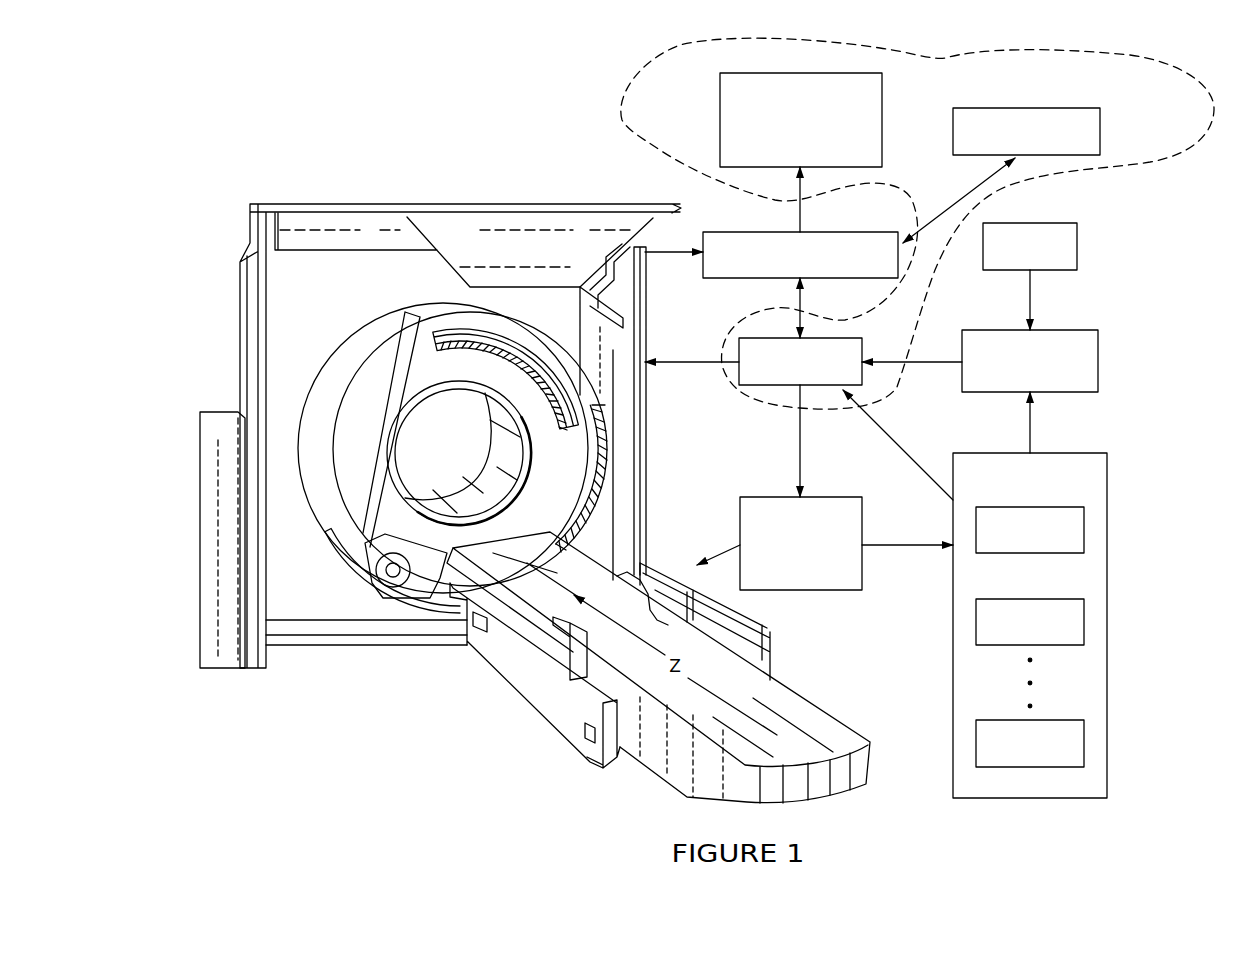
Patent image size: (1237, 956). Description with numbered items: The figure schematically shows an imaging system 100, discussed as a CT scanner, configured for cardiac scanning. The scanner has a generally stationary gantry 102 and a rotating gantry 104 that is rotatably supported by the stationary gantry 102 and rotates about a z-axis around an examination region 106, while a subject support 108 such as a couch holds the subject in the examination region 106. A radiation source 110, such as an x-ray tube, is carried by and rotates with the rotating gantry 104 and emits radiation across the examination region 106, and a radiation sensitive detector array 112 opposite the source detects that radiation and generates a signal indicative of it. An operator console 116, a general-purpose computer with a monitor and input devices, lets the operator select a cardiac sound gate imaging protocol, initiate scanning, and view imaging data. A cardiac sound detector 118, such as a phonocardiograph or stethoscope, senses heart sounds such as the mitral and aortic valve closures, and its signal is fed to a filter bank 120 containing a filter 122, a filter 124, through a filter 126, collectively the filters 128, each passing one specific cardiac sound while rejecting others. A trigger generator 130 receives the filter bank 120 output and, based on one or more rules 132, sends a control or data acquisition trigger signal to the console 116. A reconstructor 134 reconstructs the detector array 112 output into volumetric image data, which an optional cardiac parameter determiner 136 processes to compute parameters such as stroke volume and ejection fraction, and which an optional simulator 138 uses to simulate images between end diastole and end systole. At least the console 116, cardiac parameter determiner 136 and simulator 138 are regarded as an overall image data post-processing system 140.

The imaging system 100 is at (278, 98).
The stationary gantry 102 is at (252, 332).
The rotating gantry 104 is at (413, 367).
The examination region 106 is at (412, 466).
The subject support 108 is at (806, 722).
The radiation source 110 is at (393, 573).
The radiation sensitive detector array 112 is at (558, 388).
The operator console 116 is at (830, 338).
The cardiac sound detector 118 is at (864, 522).
The filter bank 120 is at (1077, 453).
The filter 122 is at (1032, 553).
The filter 124 is at (1030, 598).
The filter 126 is at (1032, 768).
The filters 128 is at (1101, 497).
The trigger generator 130 is at (1077, 330).
The rules 132 is at (1030, 223).
The reconstructor 134 is at (838, 232).
The cardiac parameter determiner 136 is at (720, 122).
The simulator 138 is at (1102, 120).
The image data post-processing system 140 is at (622, 103).